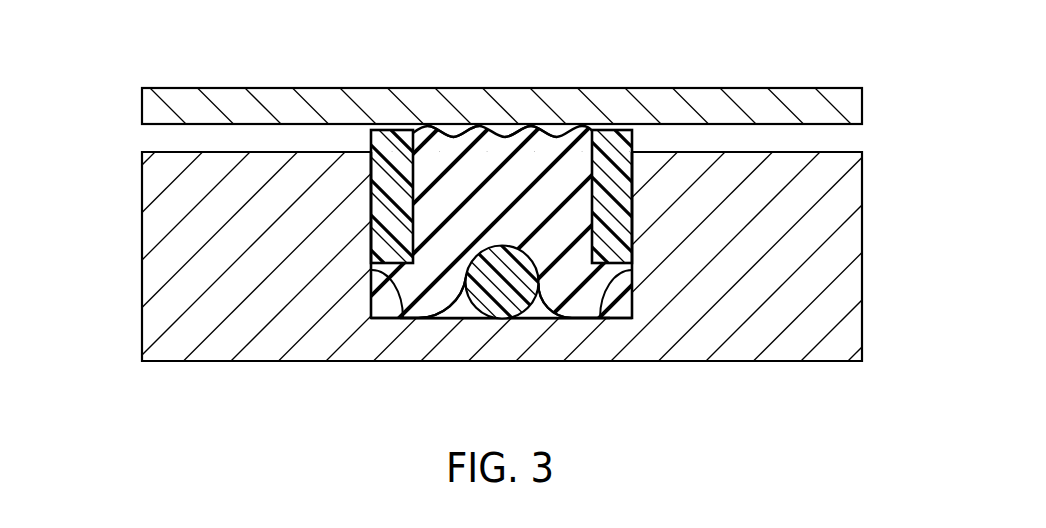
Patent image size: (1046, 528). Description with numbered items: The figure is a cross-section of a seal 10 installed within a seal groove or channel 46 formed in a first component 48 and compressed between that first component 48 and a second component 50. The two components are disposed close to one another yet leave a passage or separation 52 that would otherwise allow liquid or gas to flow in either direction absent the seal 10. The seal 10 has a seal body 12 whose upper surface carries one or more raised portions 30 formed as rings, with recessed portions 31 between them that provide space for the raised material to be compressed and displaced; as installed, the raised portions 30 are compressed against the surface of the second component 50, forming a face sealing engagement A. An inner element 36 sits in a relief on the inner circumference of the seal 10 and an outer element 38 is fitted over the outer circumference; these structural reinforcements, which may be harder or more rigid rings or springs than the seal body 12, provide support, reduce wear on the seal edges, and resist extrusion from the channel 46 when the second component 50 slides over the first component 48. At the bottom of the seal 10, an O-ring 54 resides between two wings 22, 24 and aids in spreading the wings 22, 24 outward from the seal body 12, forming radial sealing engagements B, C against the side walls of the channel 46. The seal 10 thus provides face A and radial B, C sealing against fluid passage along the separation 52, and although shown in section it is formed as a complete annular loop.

The seal 10 is at (688, 64).
The seal body 12 is at (514, 205).
The wing 22 is at (380, 278).
The wing 24 is at (622, 273).
The raised portion 30 is at (474, 125).
The recessed portion 31 is at (452, 134).
The inner element 36 is at (378, 177).
The outer element 38 is at (620, 185).
The seal groove or channel 46 is at (452, 310).
The first component 48 is at (150, 327).
The second component 50 is at (150, 107).
The separation 52 is at (848, 138).
The O-ring 54 is at (532, 306).
The face sealing engagement A is at (531, 125).
The radial sealing engagement B is at (400, 305).
The radial sealing engagement C is at (602, 307).